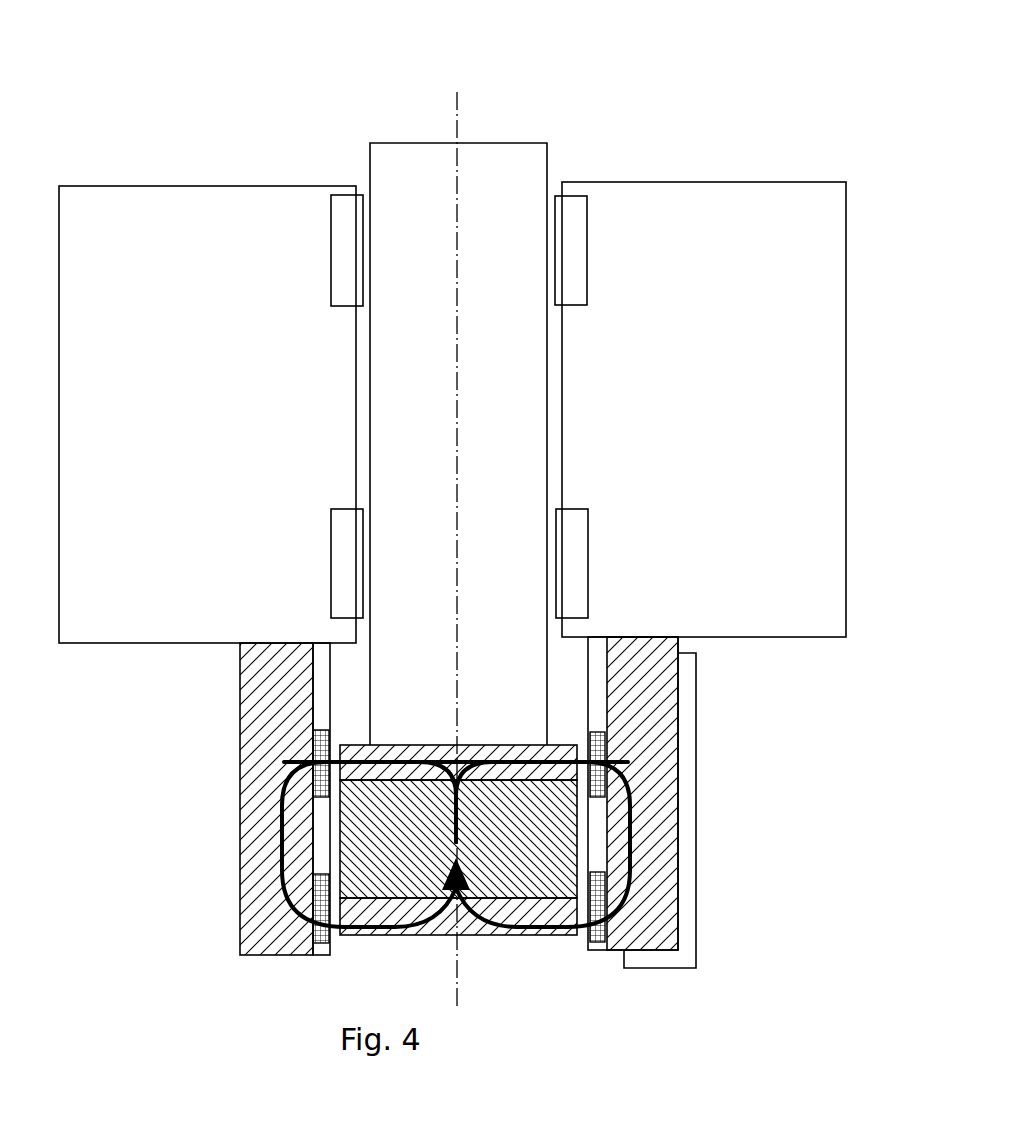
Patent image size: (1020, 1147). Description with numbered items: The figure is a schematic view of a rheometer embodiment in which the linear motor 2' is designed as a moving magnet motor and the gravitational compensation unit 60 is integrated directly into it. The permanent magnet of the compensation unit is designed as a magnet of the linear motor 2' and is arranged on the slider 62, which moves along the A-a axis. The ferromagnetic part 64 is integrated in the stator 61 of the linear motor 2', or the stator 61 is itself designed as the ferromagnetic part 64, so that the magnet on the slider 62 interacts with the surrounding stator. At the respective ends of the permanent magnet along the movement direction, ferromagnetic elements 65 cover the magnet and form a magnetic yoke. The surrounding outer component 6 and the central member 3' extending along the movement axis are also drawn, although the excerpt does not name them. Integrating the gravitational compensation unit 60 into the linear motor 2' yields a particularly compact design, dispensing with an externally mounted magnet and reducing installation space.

The coil / magnet housing 6 is at (218, 168).
The shaft 3' is at (489, 384).
The linear motor 2' is at (463, 867).
The gravitational compensation unit 60 is at (463, 867).
The stator 61 is at (743, 793).
The ferromagnetic part 64 is at (663, 842).
The ferromagnetic elements 65 is at (559, 886).
The slider 62 is at (498, 955).